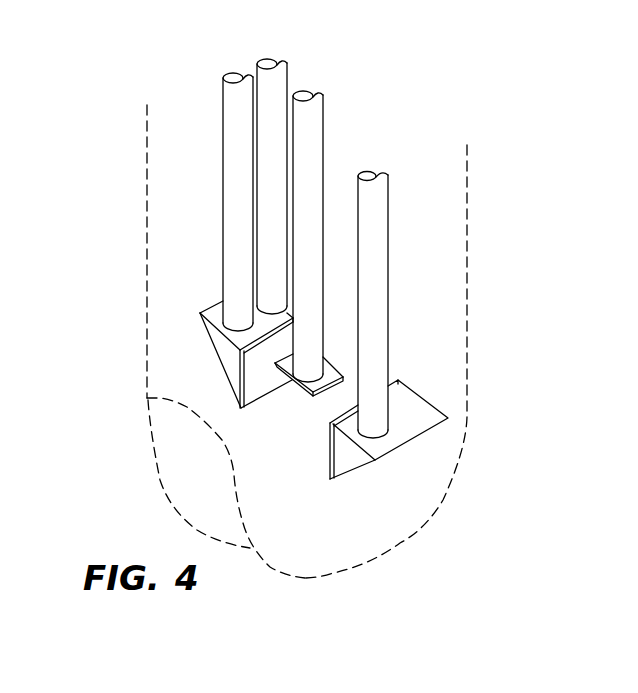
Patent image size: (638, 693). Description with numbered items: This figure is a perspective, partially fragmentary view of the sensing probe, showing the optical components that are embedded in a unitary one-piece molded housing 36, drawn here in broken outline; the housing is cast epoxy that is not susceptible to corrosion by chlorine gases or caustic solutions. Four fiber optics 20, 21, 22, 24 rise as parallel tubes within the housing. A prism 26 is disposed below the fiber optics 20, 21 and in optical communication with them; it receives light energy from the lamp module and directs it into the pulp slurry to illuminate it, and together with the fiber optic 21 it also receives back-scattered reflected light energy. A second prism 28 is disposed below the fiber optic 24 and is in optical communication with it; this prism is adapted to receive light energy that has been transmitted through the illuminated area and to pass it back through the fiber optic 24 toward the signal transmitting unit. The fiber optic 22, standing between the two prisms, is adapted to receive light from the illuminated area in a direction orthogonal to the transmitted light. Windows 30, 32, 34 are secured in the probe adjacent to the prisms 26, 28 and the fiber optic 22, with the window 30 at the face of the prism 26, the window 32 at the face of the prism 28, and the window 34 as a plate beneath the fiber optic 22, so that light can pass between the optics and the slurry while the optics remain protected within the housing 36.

The fiber optic 20 is at (237, 80).
The fiber optic 21 is at (267, 63).
The fiber optic 22 is at (302, 95).
The fiber optic 24 is at (367, 178).
The prism 26 is at (218, 345).
The prism 28 is at (352, 457).
The window 30 is at (258, 383).
The window 32 is at (329, 447).
The window 34 is at (302, 393).
The unitary one-piece molded housing 36 is at (443, 318).